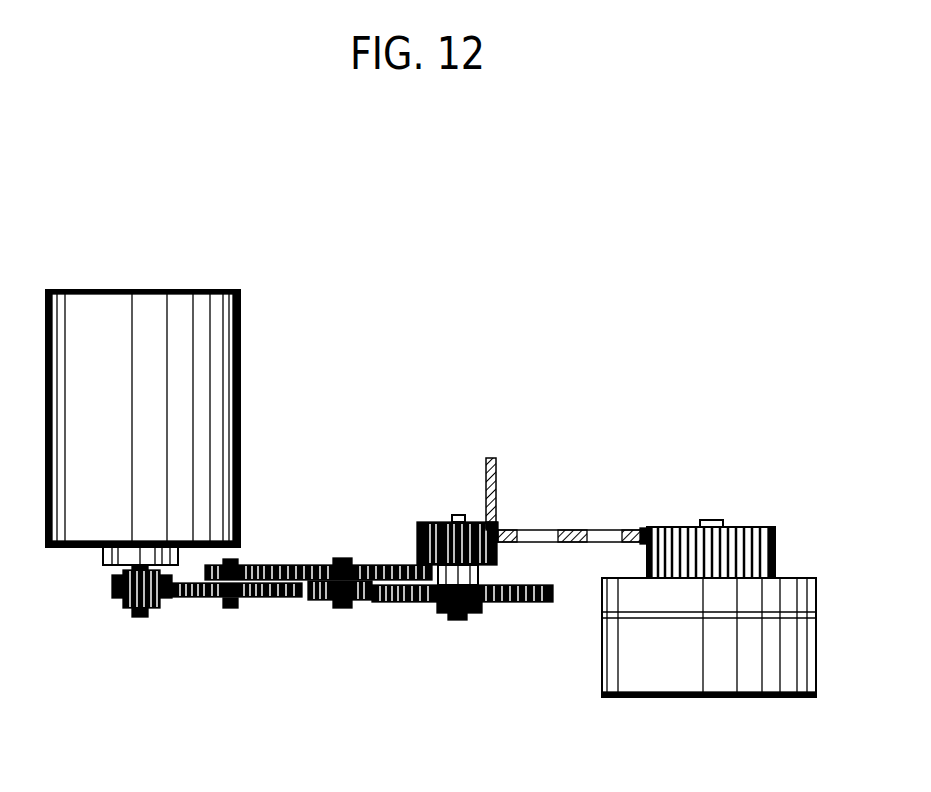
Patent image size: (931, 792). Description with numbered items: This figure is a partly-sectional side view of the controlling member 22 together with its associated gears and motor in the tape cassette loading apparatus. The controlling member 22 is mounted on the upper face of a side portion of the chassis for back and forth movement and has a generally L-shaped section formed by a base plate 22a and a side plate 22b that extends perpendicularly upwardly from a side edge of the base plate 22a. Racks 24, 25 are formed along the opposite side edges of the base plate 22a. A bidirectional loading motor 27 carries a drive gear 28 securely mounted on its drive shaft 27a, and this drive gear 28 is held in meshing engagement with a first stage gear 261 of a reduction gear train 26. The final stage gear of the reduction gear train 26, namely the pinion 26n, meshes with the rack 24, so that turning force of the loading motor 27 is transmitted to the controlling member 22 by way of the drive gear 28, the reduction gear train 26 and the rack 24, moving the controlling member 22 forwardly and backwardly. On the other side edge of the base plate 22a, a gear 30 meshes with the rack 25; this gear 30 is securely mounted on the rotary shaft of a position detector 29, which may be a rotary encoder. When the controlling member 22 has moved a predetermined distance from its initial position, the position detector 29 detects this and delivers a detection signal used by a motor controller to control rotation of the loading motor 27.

The controlling member 22 is at (572, 545).
The base plate 22a is at (574, 528).
The side plate 22b is at (487, 497).
The rack 24 is at (500, 528).
The rack 25 is at (647, 530).
The reduction gear train 26 is at (273, 487).
The first stage gear 261 is at (208, 600).
The pinion 26n is at (417, 541).
The loading motor 27 is at (238, 368).
The drive shaft 27a is at (141, 618).
The drive gear 28 is at (112, 593).
The position detector 29 is at (602, 660).
The gear 30 is at (775, 541).